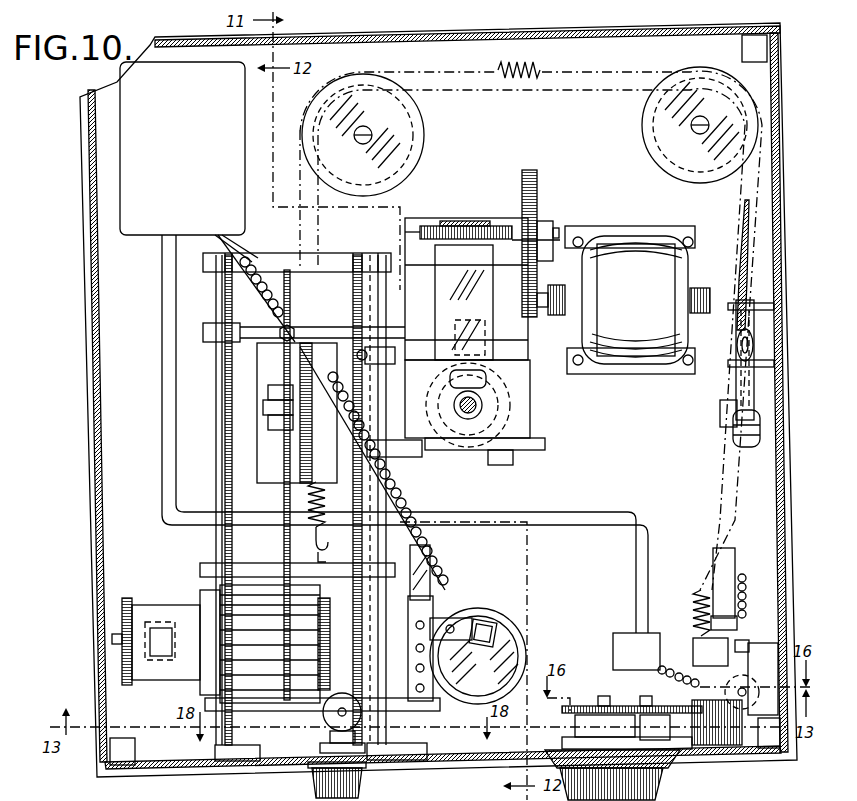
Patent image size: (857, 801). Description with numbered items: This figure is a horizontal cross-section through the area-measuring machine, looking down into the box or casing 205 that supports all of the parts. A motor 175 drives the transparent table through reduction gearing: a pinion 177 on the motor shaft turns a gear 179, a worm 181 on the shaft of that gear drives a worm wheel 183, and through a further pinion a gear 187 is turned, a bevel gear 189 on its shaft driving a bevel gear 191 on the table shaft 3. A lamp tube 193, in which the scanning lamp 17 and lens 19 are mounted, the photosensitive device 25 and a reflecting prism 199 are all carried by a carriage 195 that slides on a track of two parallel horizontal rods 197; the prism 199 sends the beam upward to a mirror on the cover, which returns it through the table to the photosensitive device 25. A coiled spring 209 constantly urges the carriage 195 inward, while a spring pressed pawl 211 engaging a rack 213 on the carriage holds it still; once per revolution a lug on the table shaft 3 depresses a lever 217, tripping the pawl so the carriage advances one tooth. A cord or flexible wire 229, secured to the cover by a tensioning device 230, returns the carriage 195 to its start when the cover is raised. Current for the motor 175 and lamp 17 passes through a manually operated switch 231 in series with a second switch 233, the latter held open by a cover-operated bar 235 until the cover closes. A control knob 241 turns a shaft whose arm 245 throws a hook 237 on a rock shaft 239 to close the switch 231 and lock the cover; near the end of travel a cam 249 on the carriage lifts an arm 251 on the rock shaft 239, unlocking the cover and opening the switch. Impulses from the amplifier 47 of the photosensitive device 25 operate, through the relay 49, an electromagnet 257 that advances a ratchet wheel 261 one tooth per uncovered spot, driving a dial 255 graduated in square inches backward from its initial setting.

The table shaft 3 is at (452, 405).
The scanning lamp 17 is at (185, 605).
The lens 19 is at (322, 626).
The photosensitive device 25 is at (508, 662).
The amplifier 47 is at (146, 222).
The relay 49 is at (615, 637).
The motor 175 is at (626, 230).
The pinion 177 is at (536, 322).
The gear 179 is at (539, 186).
The worm 181 is at (512, 226).
The worm wheel 183 is at (447, 224).
The gear 187 is at (440, 322).
The bevel gear 189 is at (505, 380).
The bevel gear 191 is at (515, 414).
The lamp tube 193 is at (232, 592).
The carriage 195 is at (335, 572).
The horizontal rods 197 is at (228, 488).
The reflecting prism 199 is at (492, 624).
The box or casing 205 is at (92, 406).
The coiled spring 209 is at (521, 80).
The spring pressed pawl 211 is at (280, 432).
The rack 213 is at (314, 549).
The lever 217 is at (426, 456).
The cord or flexible wire 229 is at (752, 494).
The tensioning device 230 is at (737, 392).
The manually operated switch 231 is at (405, 704).
The second switch 233 is at (713, 567).
The bar 235 is at (743, 285).
The hook 237 is at (372, 732).
The rock shaft 239 is at (370, 304).
The control knob 241 is at (312, 784).
The arm 245 is at (323, 734).
The cam 249 is at (445, 558).
The arm 251 is at (365, 353).
The dial 255 is at (657, 783).
The electromagnet 257 is at (735, 745).
The ratchet wheel 261 is at (580, 718).